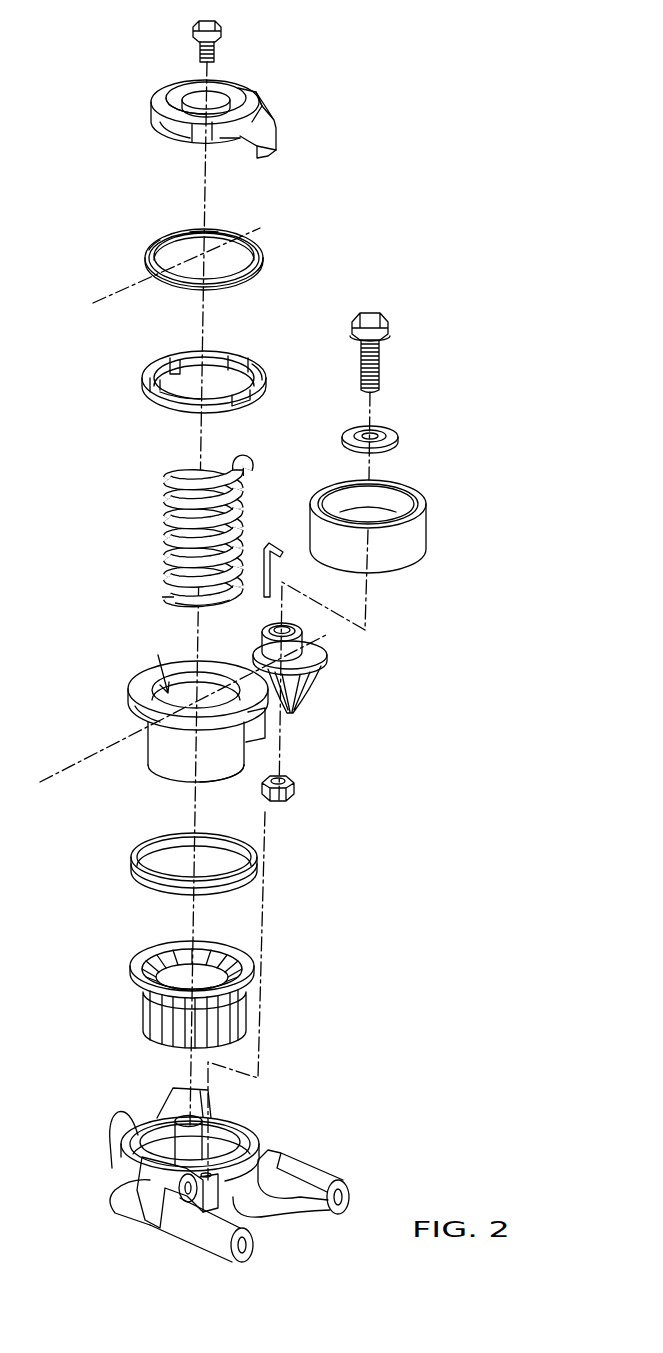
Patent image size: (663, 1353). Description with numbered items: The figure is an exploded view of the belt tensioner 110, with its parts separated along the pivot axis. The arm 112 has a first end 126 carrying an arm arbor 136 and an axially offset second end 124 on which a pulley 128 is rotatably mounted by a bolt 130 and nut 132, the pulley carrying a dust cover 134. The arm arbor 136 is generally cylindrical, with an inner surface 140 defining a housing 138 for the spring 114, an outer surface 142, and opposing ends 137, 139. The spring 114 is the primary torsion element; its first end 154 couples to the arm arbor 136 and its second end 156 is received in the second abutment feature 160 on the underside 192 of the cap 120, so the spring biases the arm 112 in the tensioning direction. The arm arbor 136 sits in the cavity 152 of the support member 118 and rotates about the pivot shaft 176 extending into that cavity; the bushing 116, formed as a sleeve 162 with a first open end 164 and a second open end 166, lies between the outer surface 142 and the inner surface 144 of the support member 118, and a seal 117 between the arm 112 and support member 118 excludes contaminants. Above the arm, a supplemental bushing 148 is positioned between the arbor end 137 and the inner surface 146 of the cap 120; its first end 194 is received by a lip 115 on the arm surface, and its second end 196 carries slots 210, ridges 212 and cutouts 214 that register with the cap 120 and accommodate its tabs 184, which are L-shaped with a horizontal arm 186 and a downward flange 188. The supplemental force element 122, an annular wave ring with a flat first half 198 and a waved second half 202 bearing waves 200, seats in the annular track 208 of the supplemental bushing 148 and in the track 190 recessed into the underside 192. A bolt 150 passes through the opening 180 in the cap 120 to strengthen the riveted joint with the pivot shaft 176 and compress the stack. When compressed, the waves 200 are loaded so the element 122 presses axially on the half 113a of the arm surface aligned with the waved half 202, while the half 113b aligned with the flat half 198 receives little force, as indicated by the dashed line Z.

The belt tensioner 110 is at (403, 160).
The arm 112 is at (191, 721).
The half of arm surface 113a is at (132, 698).
The half of arm surface 113b is at (258, 700).
The spring 114 is at (193, 519).
The lip 115 is at (143, 677).
The bushing 116 is at (195, 986).
The seal 117 is at (132, 860).
The support member 118 is at (207, 1170).
The cap 120 is at (225, 113).
The supplemental force element 122 is at (201, 258).
The second end 124 is at (325, 660).
The first end 126 is at (140, 716).
The pulley 128 is at (426, 522).
The bolt 130 is at (390, 326).
The nut 132 is at (295, 790).
The dust cover 134 is at (398, 437).
The arm arbor 136 is at (178, 782).
The end of arm arbor 137 is at (190, 672).
The housing 138 is at (158, 655).
The end of arm arbor 139 is at (214, 790).
The inner surface 140 is at (213, 688).
The outer surface 142 is at (150, 755).
The inner surface 144 is at (232, 1147).
The inner surface 146 is at (180, 136).
The supplemental bushing 148 is at (160, 388).
The bolt 150 is at (200, 30).
The cavity 152 is at (168, 1125).
The first end 154 is at (163, 591).
The second end 156 is at (236, 460).
The second abutment feature 160 is at (232, 104).
The sleeve 162 is at (234, 1012).
The first open end 164 is at (170, 950).
The second open end 166 is at (156, 1042).
The pivot shaft 176 is at (202, 1135).
The opening 180 is at (217, 100).
The tabs 184 is at (275, 138).
The arm 186 is at (262, 110).
The flange 188 is at (276, 153).
The track 190 is at (196, 140).
The underside 192 is at (236, 143).
The first end 194 is at (170, 408).
The second end 196 is at (192, 384).
The flat first half 198 is at (258, 268).
The waves 200 is at (200, 232).
The waved second half 202 is at (153, 247).
The annular track 208 is at (250, 370).
The slots 210 is at (174, 362).
The ridges 212 is at (224, 360).
The cutouts 214 is at (244, 392).